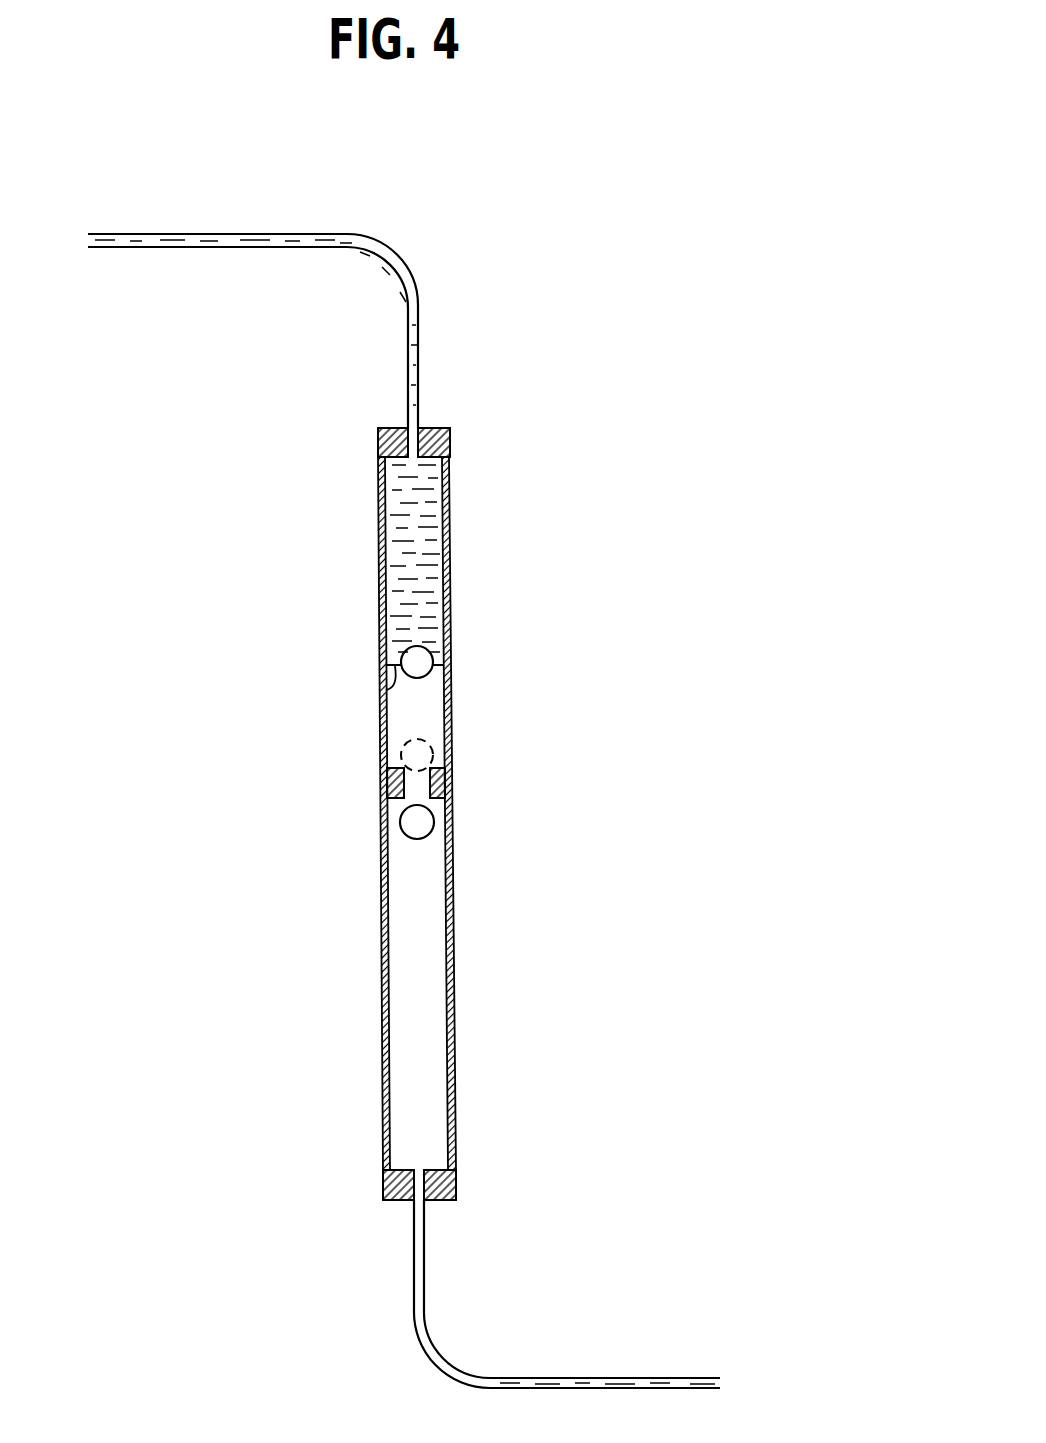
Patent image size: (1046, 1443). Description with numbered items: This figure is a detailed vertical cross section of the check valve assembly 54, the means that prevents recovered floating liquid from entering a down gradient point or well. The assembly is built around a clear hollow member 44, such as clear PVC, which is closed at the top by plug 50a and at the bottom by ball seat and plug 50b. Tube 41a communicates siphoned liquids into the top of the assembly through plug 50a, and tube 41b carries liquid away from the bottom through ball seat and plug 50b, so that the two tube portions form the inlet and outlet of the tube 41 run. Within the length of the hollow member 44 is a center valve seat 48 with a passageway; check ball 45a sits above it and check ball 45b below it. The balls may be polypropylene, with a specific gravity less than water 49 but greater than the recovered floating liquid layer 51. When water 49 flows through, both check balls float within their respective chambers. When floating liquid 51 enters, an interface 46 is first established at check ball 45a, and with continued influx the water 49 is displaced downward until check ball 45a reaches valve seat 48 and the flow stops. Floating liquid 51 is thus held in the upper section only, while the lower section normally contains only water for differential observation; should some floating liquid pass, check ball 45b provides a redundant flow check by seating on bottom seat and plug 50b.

The check valve assembly 54 is at (612, 786).
The tube 41 is at (452, 720).
The tube 41a is at (237, 234).
The tube 41b is at (598, 1378).
The clear hollow member 44 is at (450, 550).
The plug 50a is at (449, 436).
The ball seat and plug 50b is at (457, 1180).
The recovered floating liquid layer 51 is at (400, 558).
The check ball 45a is at (425, 662).
The check ball 45b is at (413, 827).
The interface 46 is at (385, 692).
The center valve seat 48 is at (452, 787).
The water 49 is at (422, 968).